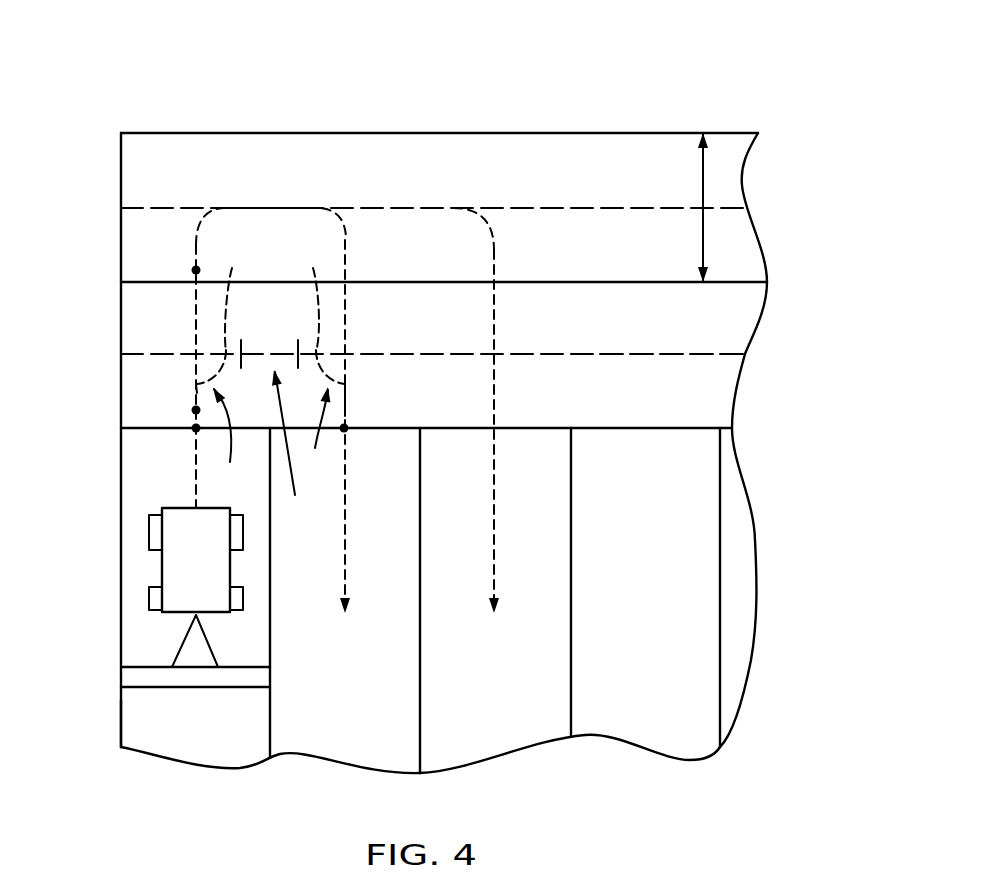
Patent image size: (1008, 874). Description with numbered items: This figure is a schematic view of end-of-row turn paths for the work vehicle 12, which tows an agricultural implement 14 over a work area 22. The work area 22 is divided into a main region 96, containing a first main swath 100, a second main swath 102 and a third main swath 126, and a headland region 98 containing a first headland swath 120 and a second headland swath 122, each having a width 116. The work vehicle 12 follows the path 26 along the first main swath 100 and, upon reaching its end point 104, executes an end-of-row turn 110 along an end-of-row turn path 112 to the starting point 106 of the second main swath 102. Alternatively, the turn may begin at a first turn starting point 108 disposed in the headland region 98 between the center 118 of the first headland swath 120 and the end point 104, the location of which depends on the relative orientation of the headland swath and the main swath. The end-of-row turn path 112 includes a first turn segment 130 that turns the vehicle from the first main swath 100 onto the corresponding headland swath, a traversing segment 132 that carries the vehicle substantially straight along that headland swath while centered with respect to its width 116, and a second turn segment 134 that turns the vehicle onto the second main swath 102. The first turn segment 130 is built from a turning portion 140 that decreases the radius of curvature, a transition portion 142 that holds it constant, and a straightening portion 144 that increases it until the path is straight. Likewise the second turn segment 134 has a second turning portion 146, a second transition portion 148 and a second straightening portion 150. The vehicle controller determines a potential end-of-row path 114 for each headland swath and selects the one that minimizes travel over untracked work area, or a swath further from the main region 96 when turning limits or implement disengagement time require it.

The work area 22 is at (447, 85).
The work vehicle 12 is at (173, 565).
The agricultural implement 14 is at (152, 670).
The path 26 is at (196, 467).
The main region 96 is at (690, 565).
The headland region 98 is at (633, 163).
The first main swath 100 is at (138, 717).
The second main swath 102 is at (305, 728).
The end point 104 is at (196, 428).
The starting point 106 is at (344, 428).
The first turn starting point 108 is at (196, 270).
The end-of-row turn 110 is at (448, 368).
The end-of-row turn path 112 is at (269, 354).
The potential end-of-row path 114 is at (370, 229).
The width 116 is at (703, 176).
The center 118 is at (697, 355).
The first headland swath 120 is at (509, 355).
The second headland swath 122 is at (533, 160).
The third main swath 126 is at (528, 727).
The first turn segment 130 is at (231, 443).
The traversing segment 132 is at (294, 451).
The second turn segment 134 is at (317, 434).
The turning portion 140 is at (196, 393).
The transition portion 142 is at (196, 355).
The straightening portion 144 is at (235, 291).
The second turning portion 146 is at (312, 291).
The second transition portion 148 is at (346, 356).
The second straightening portion 150 is at (346, 416).